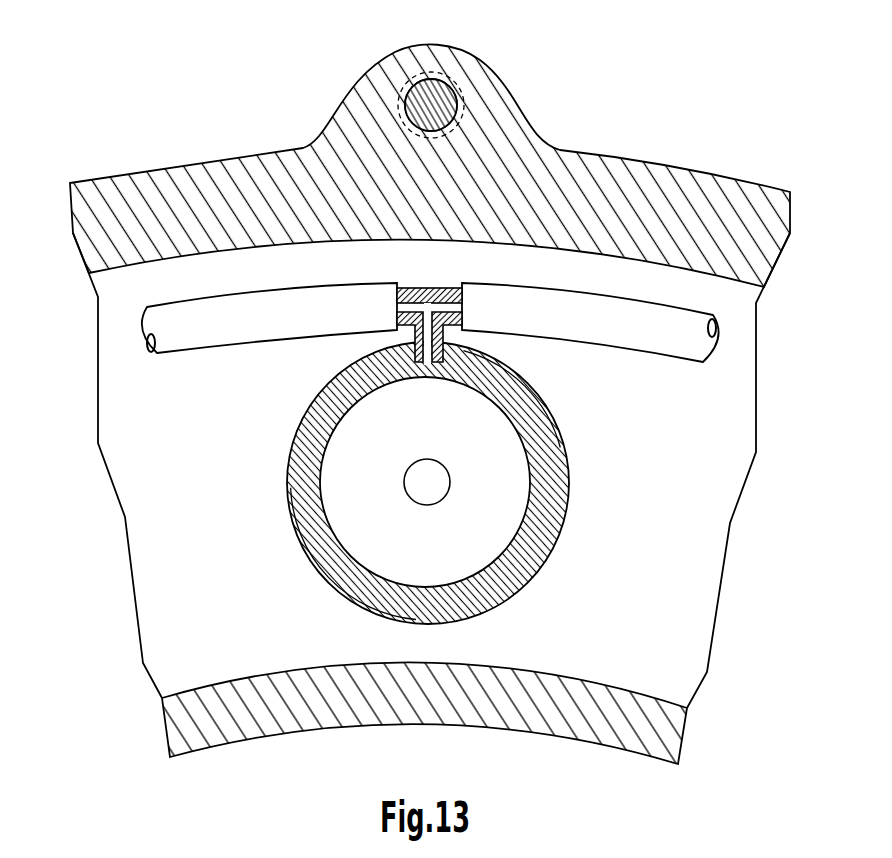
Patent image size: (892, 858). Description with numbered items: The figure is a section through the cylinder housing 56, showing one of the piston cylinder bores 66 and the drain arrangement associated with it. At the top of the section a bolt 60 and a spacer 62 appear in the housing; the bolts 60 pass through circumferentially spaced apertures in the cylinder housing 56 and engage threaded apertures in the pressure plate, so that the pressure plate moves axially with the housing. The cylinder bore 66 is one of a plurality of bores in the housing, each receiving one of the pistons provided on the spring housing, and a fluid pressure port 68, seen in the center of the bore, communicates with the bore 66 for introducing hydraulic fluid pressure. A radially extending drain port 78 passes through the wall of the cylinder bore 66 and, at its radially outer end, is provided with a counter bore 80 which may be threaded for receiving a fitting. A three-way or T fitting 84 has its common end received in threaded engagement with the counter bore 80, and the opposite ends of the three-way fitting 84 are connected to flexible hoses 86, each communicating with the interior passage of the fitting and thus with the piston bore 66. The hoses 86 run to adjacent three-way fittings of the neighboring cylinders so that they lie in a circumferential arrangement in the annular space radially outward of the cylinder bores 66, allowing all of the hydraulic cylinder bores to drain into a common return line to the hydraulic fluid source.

The cylinder housing 56 is at (98, 358).
The bolt 60 is at (427, 108).
The spacer 62 is at (457, 80).
The cylinder bore 66 is at (326, 481).
The fluid pressure port 68 is at (437, 482).
The drain port 78 is at (415, 364).
The counter bore 80 is at (443, 350).
The three-way fitting 84 is at (413, 287).
The flexible hose 86 is at (213, 293).